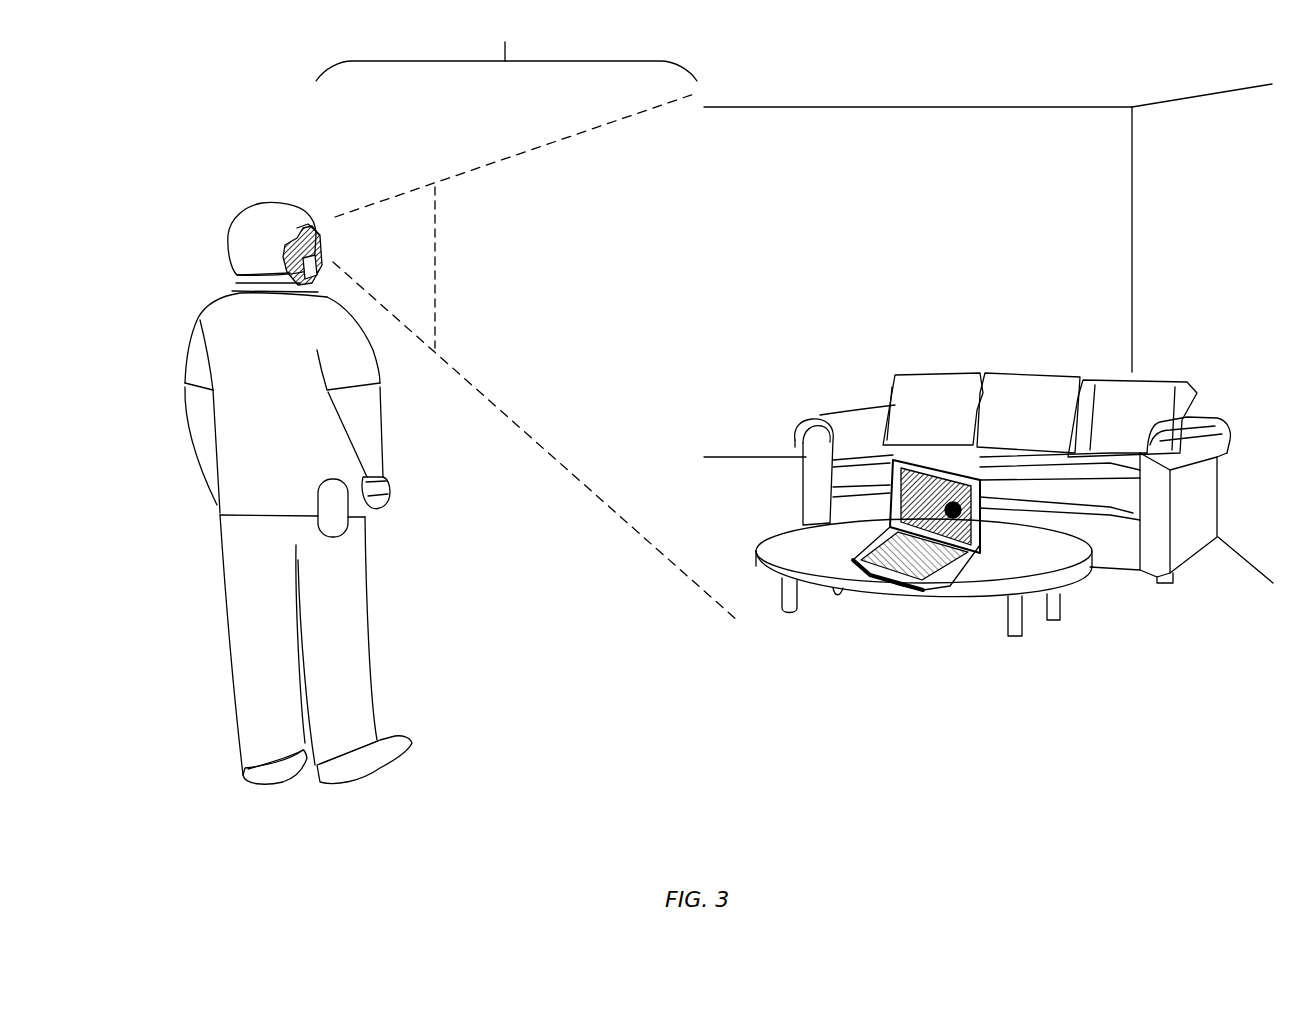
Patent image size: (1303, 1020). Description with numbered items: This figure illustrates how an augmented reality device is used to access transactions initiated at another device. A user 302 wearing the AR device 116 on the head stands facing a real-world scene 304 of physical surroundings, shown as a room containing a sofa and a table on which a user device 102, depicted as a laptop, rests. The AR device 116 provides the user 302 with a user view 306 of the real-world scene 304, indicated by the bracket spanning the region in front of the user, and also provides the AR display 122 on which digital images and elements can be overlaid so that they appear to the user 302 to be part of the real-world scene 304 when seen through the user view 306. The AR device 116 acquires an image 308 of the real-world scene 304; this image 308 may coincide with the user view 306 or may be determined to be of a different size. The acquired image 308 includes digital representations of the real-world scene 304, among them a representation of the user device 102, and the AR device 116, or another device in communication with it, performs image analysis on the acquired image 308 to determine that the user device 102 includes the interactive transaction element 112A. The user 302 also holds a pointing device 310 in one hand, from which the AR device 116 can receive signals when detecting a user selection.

The user device 102 is at (907, 585).
The interactive transaction element 112A is at (951, 515).
The AR device 116 is at (317, 220).
The AR display 122 is at (437, 258).
The user 302 is at (190, 373).
The real-world scene 304 is at (952, 82).
The user view 306 is at (506, 49).
The image 308 is at (437, 298).
The pointing device 310 is at (390, 482).